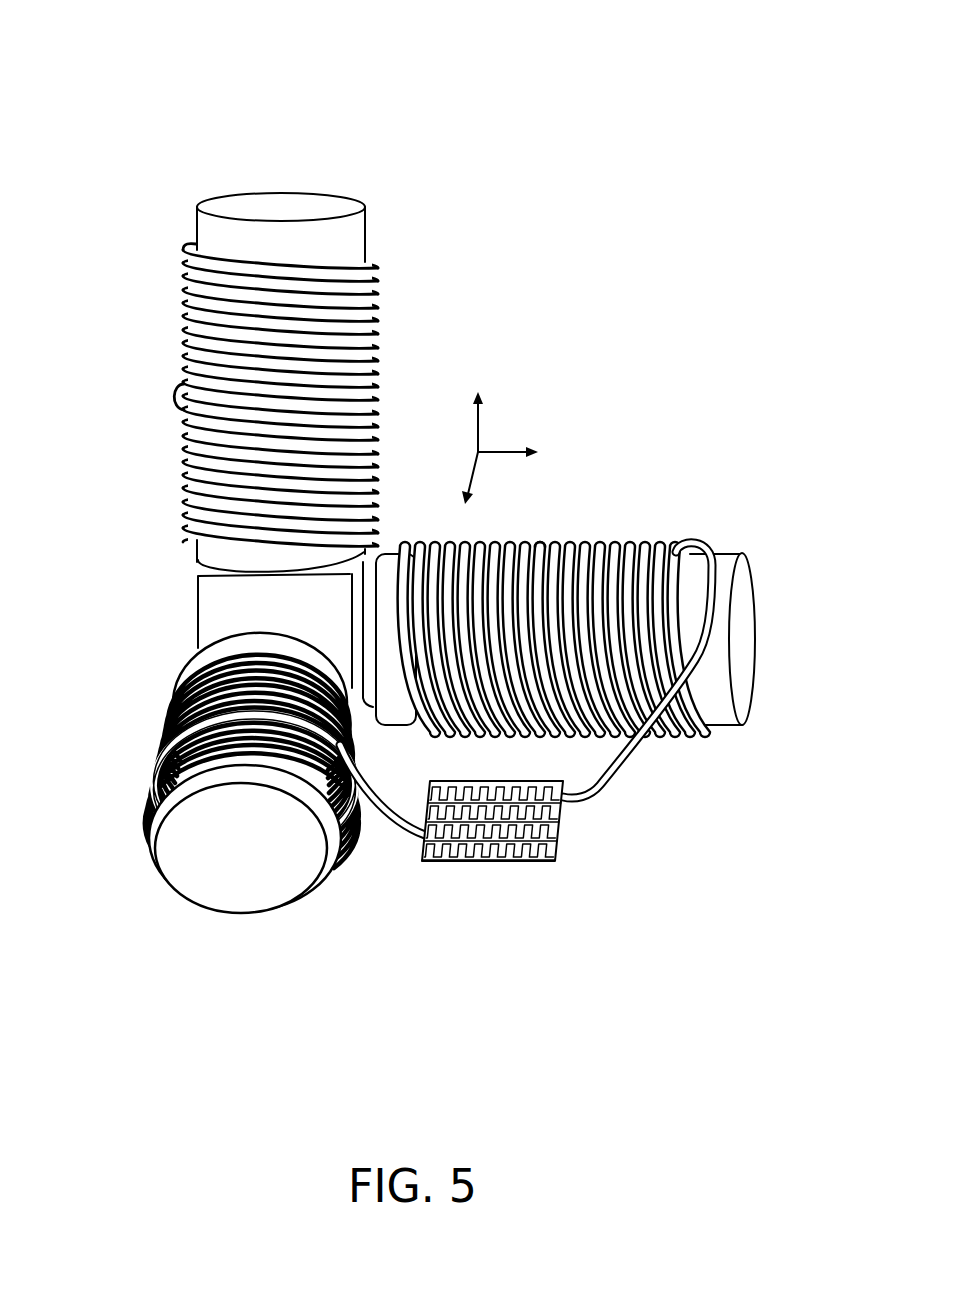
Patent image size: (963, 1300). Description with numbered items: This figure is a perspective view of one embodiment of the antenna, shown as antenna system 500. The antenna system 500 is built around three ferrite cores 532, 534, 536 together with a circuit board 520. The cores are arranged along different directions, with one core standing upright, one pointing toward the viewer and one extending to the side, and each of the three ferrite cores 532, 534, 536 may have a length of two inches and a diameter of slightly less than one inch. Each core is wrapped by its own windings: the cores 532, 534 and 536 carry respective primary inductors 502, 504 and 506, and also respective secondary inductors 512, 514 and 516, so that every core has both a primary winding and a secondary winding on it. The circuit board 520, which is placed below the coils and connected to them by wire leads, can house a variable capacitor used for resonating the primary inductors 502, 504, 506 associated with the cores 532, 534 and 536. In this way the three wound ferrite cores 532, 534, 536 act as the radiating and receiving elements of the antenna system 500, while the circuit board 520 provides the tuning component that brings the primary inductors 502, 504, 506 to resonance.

The antenna system 500 is at (160, 62).
The primary inductor 502 is at (207, 309).
The primary inductor 504 is at (143, 814).
The primary inductor 506 is at (658, 545).
The secondary inductor 512 is at (180, 397).
The secondary inductor 514 is at (150, 763).
The secondary inductor 516 is at (535, 541).
The circuit board 520 is at (514, 862).
The ferrite core 532 is at (276, 200).
The ferrite core 534 is at (237, 883).
The ferrite core 536 is at (747, 637).